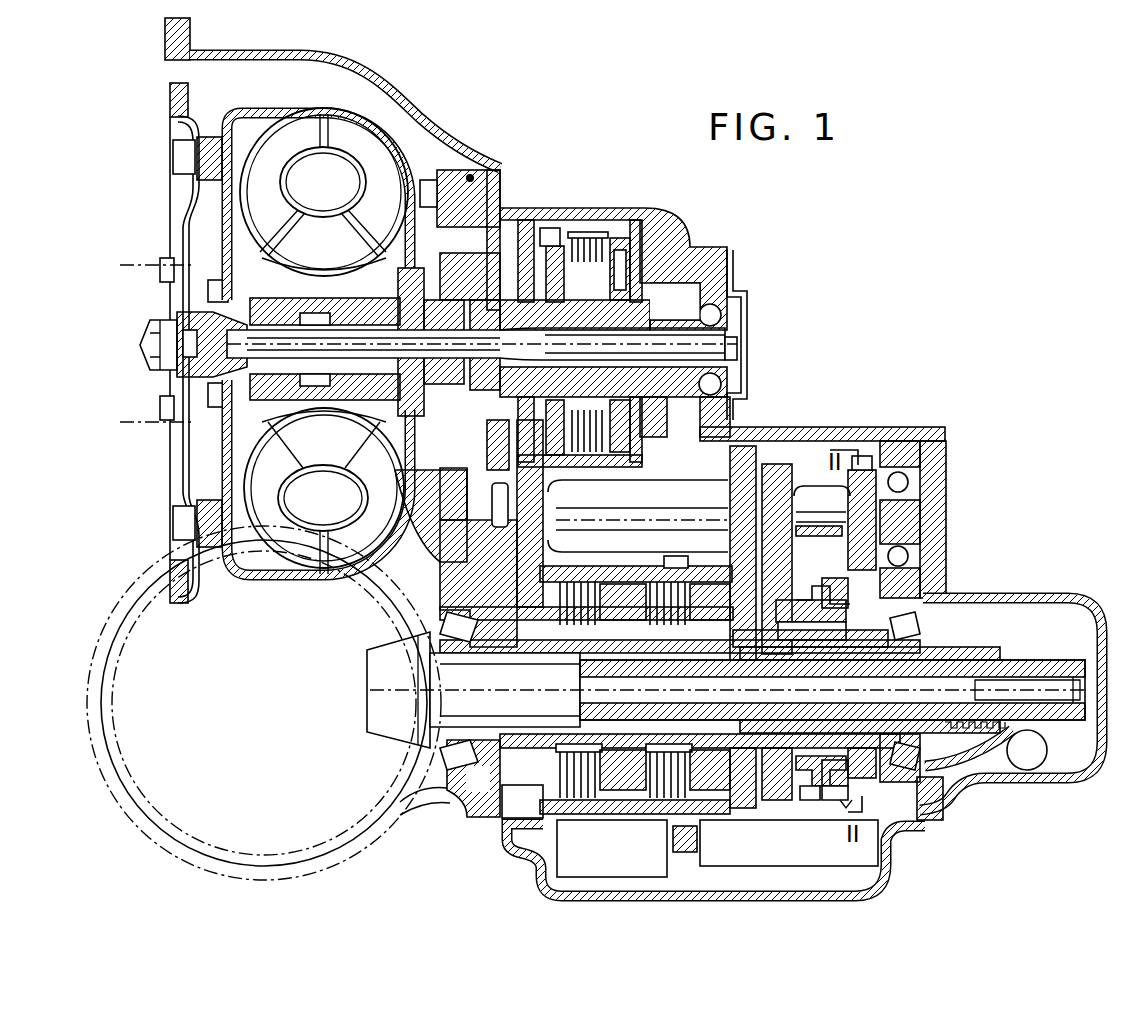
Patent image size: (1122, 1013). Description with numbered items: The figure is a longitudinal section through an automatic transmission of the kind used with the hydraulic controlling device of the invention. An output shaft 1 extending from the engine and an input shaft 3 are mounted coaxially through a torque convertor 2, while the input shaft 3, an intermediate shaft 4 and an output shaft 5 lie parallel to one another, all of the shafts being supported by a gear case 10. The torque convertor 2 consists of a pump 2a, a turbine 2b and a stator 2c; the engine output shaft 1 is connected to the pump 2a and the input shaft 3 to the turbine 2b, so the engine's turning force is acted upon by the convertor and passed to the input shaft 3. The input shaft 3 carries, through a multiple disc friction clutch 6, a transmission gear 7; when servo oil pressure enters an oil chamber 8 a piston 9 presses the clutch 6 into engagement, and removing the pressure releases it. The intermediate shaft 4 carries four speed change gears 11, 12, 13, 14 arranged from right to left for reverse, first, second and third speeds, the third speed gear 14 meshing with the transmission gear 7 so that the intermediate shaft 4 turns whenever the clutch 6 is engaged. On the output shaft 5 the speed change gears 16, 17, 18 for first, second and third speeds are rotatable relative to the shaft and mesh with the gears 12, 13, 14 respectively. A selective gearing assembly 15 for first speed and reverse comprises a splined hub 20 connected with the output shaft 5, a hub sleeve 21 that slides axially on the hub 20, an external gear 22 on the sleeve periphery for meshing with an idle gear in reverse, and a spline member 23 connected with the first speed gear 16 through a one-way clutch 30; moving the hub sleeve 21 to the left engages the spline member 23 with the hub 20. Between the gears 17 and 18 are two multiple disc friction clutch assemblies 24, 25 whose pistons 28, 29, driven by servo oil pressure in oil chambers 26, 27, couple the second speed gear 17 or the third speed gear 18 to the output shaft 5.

The output shaft 1 is at (140, 422).
The torque convertor 2 is at (318, 326).
The pump 2a is at (394, 221).
The turbine 2b is at (280, 221).
The stator 2c is at (334, 259).
The input shaft 3 is at (740, 350).
The intermediate shaft 4 is at (681, 505).
The output shaft 5 is at (422, 716).
The multiple disc friction clutch 6 is at (615, 322).
The transmission gear 7 is at (548, 246).
The oil chamber 8 is at (650, 282).
The piston 9 is at (618, 238).
The gear case 10 is at (456, 164).
The speed change gear 11 is at (870, 466).
The speed change gear 12 is at (786, 484).
The speed change gear 13 is at (734, 468).
The speed change gear 14 is at (540, 460).
The selective gearing assembly 15 is at (828, 808).
The speed change gear 16 is at (780, 802).
The speed change gear 17 is at (750, 808).
The speed change gear 18 is at (508, 760).
The splined hub 20 is at (886, 768).
The hub sleeve 21 is at (836, 590).
The external gear 22 is at (796, 528).
The spline member 23 is at (818, 596).
The multiple disc friction clutch assembly 24 is at (725, 812).
The multiple disc friction clutch assembly 25 is at (550, 806).
The oil chamber 26 is at (648, 800).
The oil chamber 27 is at (628, 792).
The piston 28 is at (672, 810).
The piston 29 is at (602, 800).
The one-way clutch 30 is at (810, 800).